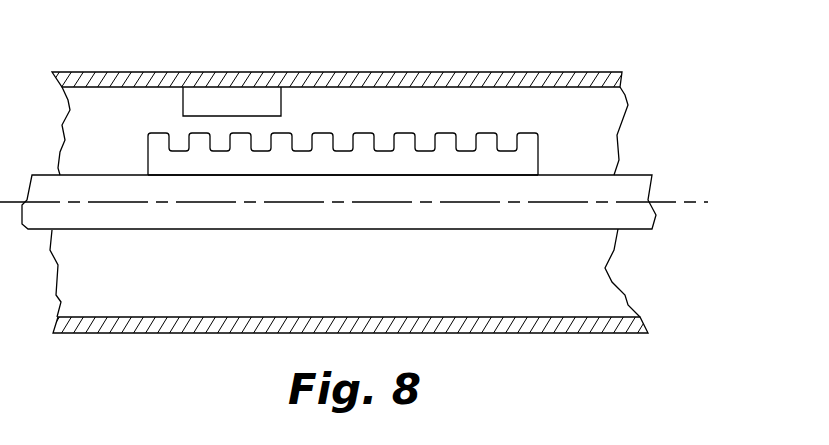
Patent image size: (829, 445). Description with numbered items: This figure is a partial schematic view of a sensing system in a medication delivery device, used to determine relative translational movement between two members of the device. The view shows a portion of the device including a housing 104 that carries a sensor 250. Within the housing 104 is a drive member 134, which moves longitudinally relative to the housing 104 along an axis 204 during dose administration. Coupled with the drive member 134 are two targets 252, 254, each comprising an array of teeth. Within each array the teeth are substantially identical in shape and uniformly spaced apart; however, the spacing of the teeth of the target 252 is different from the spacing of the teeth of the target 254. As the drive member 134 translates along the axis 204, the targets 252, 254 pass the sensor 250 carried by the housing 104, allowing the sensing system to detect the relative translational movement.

The housing 104 is at (307, 72).
The drive member 134 is at (453, 229).
The axis 204 is at (690, 200).
The sensor 250 is at (201, 97).
The target 252 is at (172, 165).
The target 254 is at (417, 143).